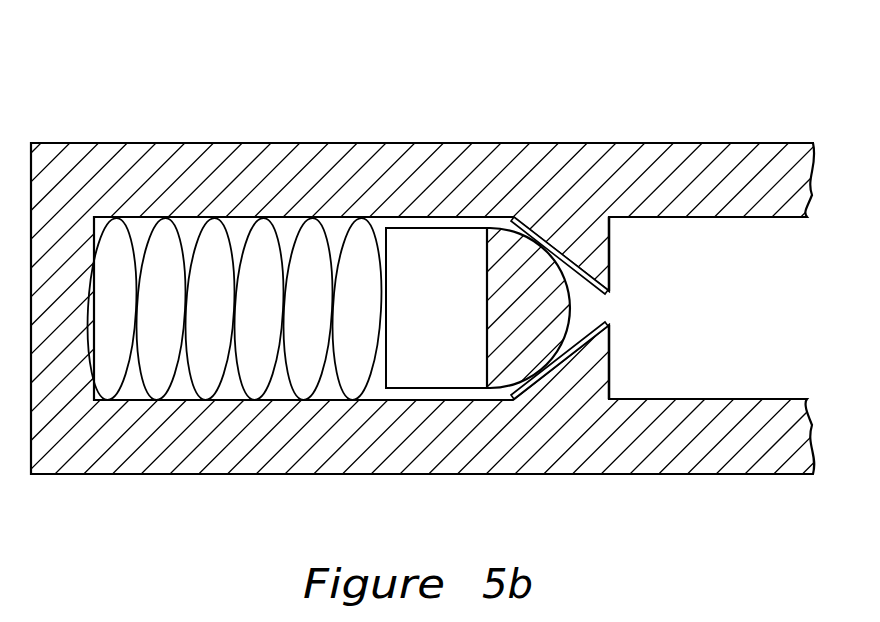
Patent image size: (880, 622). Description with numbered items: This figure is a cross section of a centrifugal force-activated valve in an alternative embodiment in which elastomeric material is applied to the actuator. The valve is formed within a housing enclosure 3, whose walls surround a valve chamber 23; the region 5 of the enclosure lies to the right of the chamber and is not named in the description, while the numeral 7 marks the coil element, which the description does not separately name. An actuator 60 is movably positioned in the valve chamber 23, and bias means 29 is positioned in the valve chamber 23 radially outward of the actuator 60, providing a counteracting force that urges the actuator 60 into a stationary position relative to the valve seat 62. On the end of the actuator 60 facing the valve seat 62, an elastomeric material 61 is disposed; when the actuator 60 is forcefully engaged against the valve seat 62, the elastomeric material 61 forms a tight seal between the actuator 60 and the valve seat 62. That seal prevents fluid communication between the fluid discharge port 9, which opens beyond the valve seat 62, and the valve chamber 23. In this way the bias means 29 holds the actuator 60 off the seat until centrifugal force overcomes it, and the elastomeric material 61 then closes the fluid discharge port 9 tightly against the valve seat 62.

The housing enclosure 3 is at (453, 143).
The bore 5 is at (733, 243).
The spring 7 is at (233, 323).
The fluid discharge port 9 is at (600, 308).
The valve chamber 23 is at (134, 387).
The bias means 29 is at (174, 387).
The actuator 60 is at (447, 262).
The elastomeric material 61 is at (517, 340).
The valve seat 62 is at (550, 245).